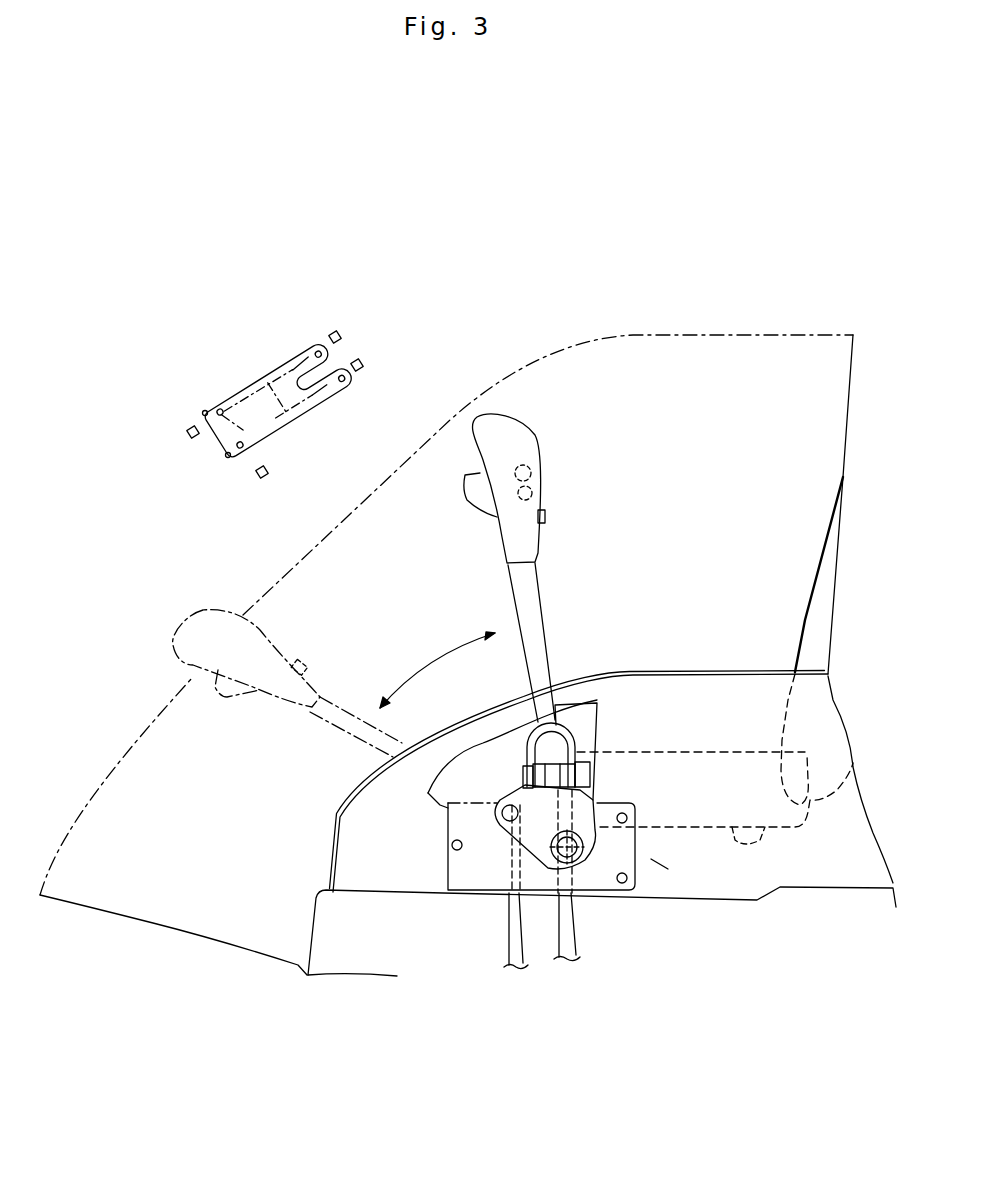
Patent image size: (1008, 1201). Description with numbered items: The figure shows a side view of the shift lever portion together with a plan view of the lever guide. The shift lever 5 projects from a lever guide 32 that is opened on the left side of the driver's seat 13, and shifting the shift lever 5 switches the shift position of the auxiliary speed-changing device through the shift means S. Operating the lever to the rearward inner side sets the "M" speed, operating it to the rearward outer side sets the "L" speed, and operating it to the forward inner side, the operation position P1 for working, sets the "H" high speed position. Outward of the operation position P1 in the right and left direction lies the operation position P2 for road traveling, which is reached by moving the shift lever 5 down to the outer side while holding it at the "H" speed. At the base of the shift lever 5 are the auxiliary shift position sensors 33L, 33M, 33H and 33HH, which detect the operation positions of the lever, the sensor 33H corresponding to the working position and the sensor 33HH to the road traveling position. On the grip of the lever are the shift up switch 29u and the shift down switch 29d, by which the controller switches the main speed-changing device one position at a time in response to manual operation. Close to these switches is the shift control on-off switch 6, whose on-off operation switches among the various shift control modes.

The shift lever 5 is at (532, 430).
The shift control on-off switch 6 is at (546, 518).
The driver's seat 13 is at (828, 532).
The shift up switch 29u is at (533, 469).
The shift down switch 29d is at (533, 490).
The lever guide 32 is at (258, 377).
The auxiliary shift position sensor 33M is at (335, 330).
The auxiliary shift position sensor 33L is at (360, 373).
The auxiliary shift position sensor 33H is at (196, 440).
The auxiliary shift position sensor 33HH is at (271, 467).
The operation position for working P1 is at (202, 413).
The operation position for road traveling P2 is at (227, 455).
The shift means S is at (650, 858).